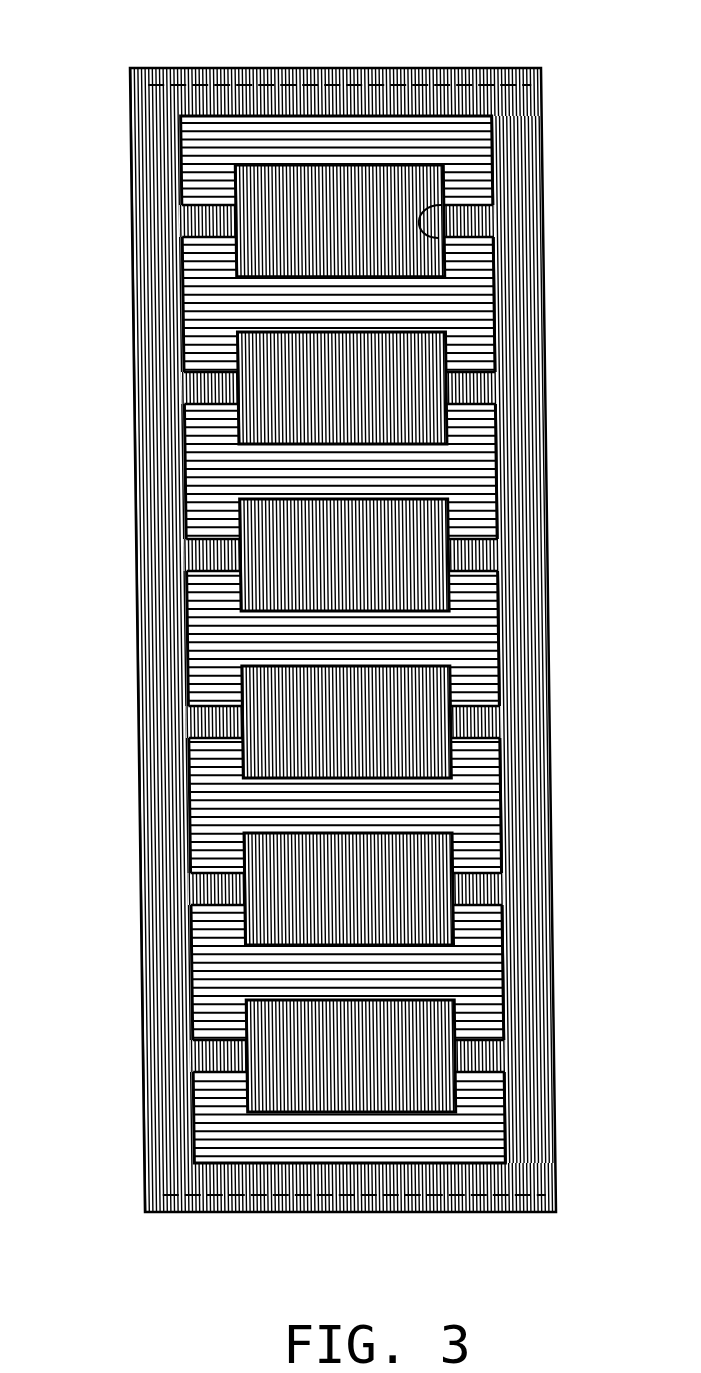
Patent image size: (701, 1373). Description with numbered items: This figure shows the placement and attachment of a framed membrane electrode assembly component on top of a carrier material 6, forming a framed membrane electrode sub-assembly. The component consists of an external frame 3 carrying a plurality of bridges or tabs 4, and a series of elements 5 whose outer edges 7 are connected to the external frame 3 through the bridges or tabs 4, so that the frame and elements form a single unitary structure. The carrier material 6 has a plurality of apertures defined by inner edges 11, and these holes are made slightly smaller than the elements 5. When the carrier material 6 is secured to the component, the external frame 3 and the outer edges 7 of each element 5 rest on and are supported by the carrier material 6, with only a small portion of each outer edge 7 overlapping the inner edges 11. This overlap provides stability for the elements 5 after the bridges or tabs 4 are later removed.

The external frame 3 is at (140, 61).
The bridges or tabs 4 is at (202, 197).
The element 5 is at (338, 157).
The carrier material 6 is at (405, 78).
The outer edges 7 is at (370, 272).
The inner edges 11 is at (430, 224).